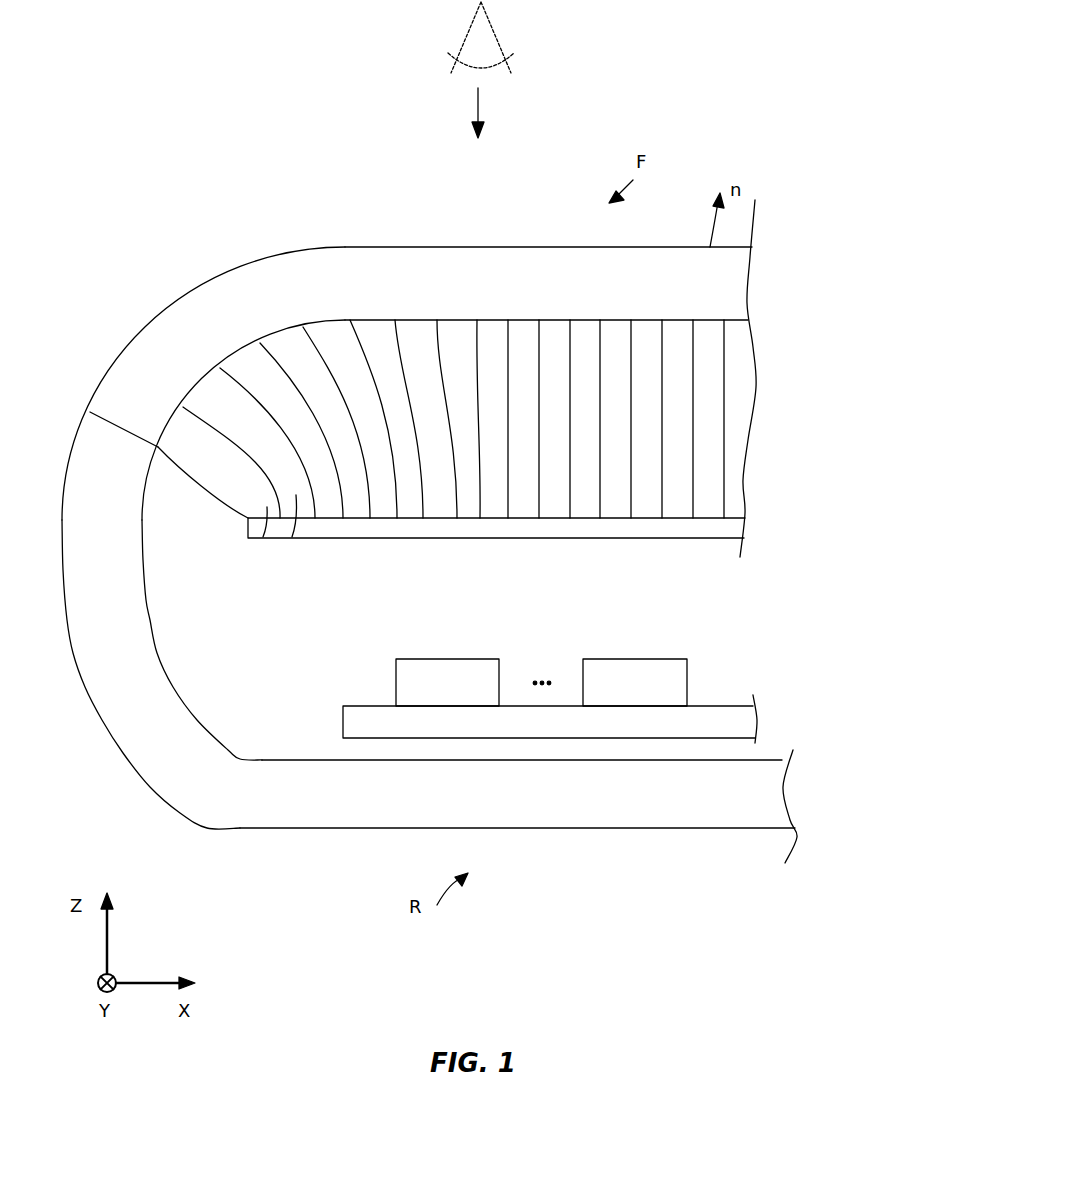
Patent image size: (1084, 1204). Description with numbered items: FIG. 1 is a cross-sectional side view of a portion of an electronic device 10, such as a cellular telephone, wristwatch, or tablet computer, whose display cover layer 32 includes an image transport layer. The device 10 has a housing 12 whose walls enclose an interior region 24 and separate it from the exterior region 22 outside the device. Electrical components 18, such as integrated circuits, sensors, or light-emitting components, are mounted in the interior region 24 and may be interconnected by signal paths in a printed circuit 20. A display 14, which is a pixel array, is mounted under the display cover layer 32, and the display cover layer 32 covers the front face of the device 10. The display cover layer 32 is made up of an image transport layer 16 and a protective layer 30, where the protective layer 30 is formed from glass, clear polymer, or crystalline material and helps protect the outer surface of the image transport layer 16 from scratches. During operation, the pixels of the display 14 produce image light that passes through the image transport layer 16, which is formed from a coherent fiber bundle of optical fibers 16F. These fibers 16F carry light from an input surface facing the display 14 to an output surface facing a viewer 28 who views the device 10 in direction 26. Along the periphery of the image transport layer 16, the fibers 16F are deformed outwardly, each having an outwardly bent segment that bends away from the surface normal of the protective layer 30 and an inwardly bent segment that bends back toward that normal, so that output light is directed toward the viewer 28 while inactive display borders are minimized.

The electronic device 10 is at (718, 133).
The housing 12 is at (615, 818).
The display 14 is at (738, 525).
The image transport layer 16 is at (810, 325).
The optical fibers 16F is at (292, 537).
The electrical components 18 is at (597, 673).
The printed circuit 20 is at (357, 718).
The exterior region 22 is at (150, 207).
The interior region 24 is at (268, 735).
The viewing direction 26 is at (481, 105).
The viewer 28 is at (484, 31).
The protective layer 30 is at (357, 252).
The display cover layer 32 is at (885, 222).